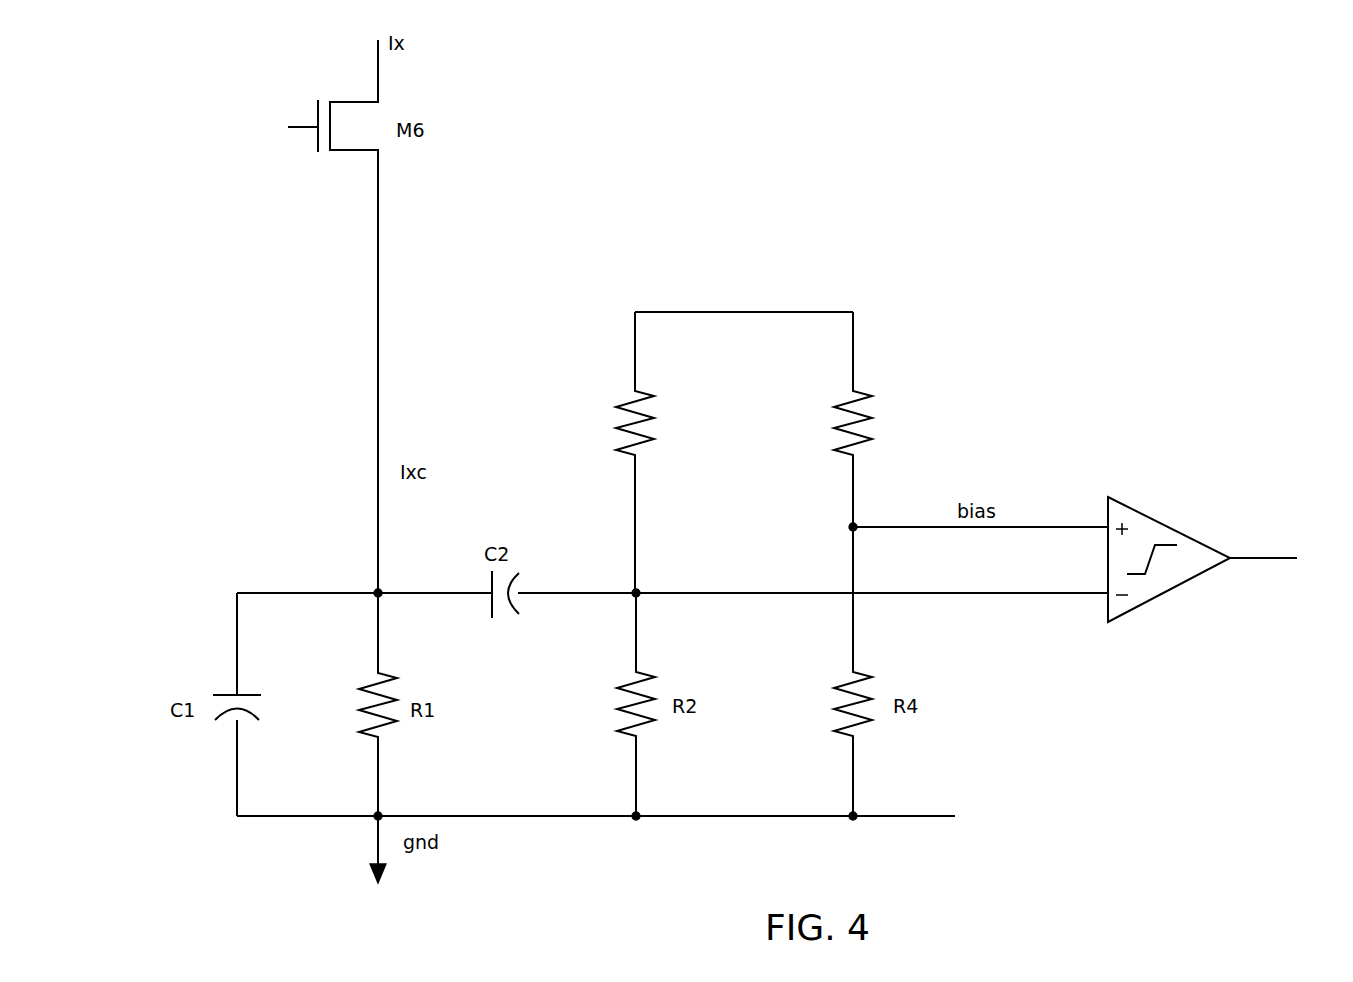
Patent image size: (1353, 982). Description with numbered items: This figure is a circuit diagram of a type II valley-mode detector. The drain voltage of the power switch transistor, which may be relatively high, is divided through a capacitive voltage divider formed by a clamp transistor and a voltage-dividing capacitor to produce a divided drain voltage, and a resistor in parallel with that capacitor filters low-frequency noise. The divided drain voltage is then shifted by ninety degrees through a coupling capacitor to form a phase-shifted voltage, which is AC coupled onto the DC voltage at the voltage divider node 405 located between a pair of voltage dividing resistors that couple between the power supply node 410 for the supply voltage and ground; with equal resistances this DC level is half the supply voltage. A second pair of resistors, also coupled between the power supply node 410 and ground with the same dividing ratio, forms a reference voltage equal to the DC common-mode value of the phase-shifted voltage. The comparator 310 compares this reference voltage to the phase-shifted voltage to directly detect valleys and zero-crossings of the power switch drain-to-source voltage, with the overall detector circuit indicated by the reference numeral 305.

The current sensing circuit 305 is at (520, 392).
The comparator 310 is at (1183, 583).
The voltage divider node 405 is at (634, 597).
The power supply node 410 is at (747, 312).